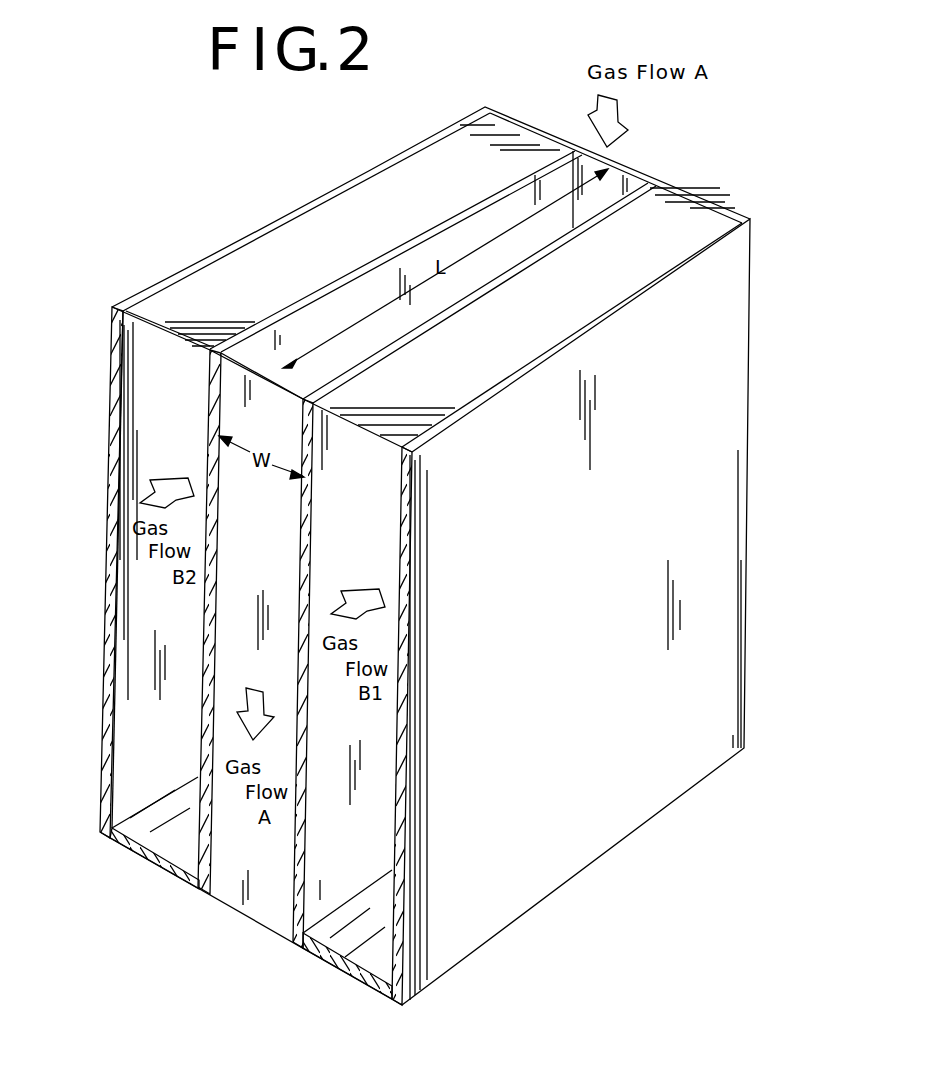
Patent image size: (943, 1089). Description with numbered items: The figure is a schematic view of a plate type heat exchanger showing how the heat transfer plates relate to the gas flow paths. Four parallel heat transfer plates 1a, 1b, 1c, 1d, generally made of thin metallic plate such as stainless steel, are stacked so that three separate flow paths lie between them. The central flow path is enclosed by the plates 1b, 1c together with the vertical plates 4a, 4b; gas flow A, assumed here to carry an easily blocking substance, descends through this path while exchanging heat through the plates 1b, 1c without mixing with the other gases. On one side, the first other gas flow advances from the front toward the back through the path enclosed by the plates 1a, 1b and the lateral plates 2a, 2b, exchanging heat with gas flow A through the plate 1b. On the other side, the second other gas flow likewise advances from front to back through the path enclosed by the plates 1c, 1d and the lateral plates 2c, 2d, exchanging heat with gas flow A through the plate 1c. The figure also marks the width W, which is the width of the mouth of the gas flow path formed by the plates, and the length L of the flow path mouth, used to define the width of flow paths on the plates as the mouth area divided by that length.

The plate 1a is at (742, 350).
The plate 1b is at (312, 900).
The plate 1c is at (196, 849).
The plate 1d is at (108, 472).
The lateral plate 2a is at (690, 207).
The lateral plate 2b is at (348, 978).
The lateral plate 2c is at (532, 145).
The lateral plate 2d is at (168, 880).
The vertical plate 4a is at (253, 898).
The vertical plate 4b is at (625, 173).